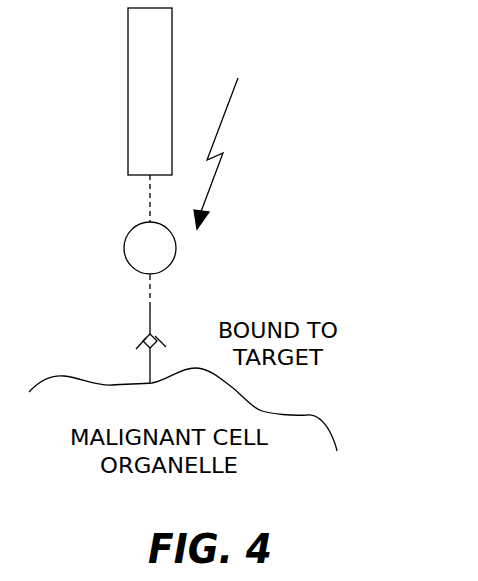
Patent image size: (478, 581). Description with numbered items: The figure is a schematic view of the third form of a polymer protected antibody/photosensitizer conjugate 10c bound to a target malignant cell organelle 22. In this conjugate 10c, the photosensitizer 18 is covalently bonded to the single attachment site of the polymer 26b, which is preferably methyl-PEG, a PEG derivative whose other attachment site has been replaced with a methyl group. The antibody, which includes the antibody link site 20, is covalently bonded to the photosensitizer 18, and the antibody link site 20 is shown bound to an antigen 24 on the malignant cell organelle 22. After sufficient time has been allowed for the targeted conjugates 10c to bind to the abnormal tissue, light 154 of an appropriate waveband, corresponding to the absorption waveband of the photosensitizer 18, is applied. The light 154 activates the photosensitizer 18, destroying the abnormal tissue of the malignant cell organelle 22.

The polymer 26b is at (128, 23).
The light 154 is at (229, 102).
The photosensitizer 18 is at (131, 233).
The polymer protected antibody/photosensitizer conjugate 10c is at (87, 261).
The antibody link site 20 is at (160, 335).
The antigen 24 is at (138, 345).
The malignant cell organelle 22 is at (333, 427).